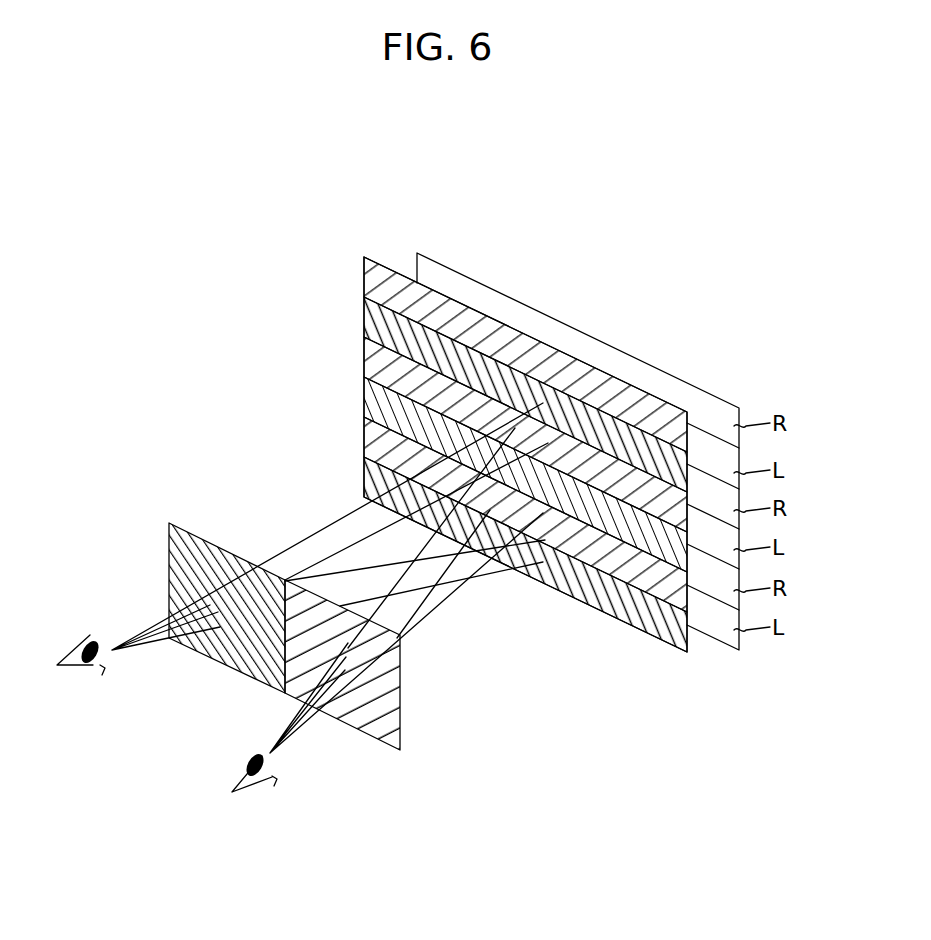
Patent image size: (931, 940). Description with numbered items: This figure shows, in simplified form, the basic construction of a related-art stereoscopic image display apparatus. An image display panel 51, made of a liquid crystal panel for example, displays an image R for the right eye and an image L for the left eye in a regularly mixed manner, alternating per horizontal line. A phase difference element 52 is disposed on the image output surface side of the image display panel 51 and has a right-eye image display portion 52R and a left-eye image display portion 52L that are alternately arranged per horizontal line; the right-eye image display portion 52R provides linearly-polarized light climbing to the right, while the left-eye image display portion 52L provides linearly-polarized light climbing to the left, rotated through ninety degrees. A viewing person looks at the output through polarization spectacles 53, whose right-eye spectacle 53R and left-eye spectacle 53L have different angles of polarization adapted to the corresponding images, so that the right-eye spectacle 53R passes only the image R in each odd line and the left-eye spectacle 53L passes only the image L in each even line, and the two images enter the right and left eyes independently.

The image display panel 51 is at (578, 325).
The phase difference element 52 is at (469, 410).
The right-eye image display portion 52R is at (362, 272).
The left-eye image display portion 52L is at (380, 473).
The polarization spectacles 53 is at (344, 664).
The left-eye spectacle 53L is at (232, 663).
The right-eye spectacle 53R is at (378, 730).